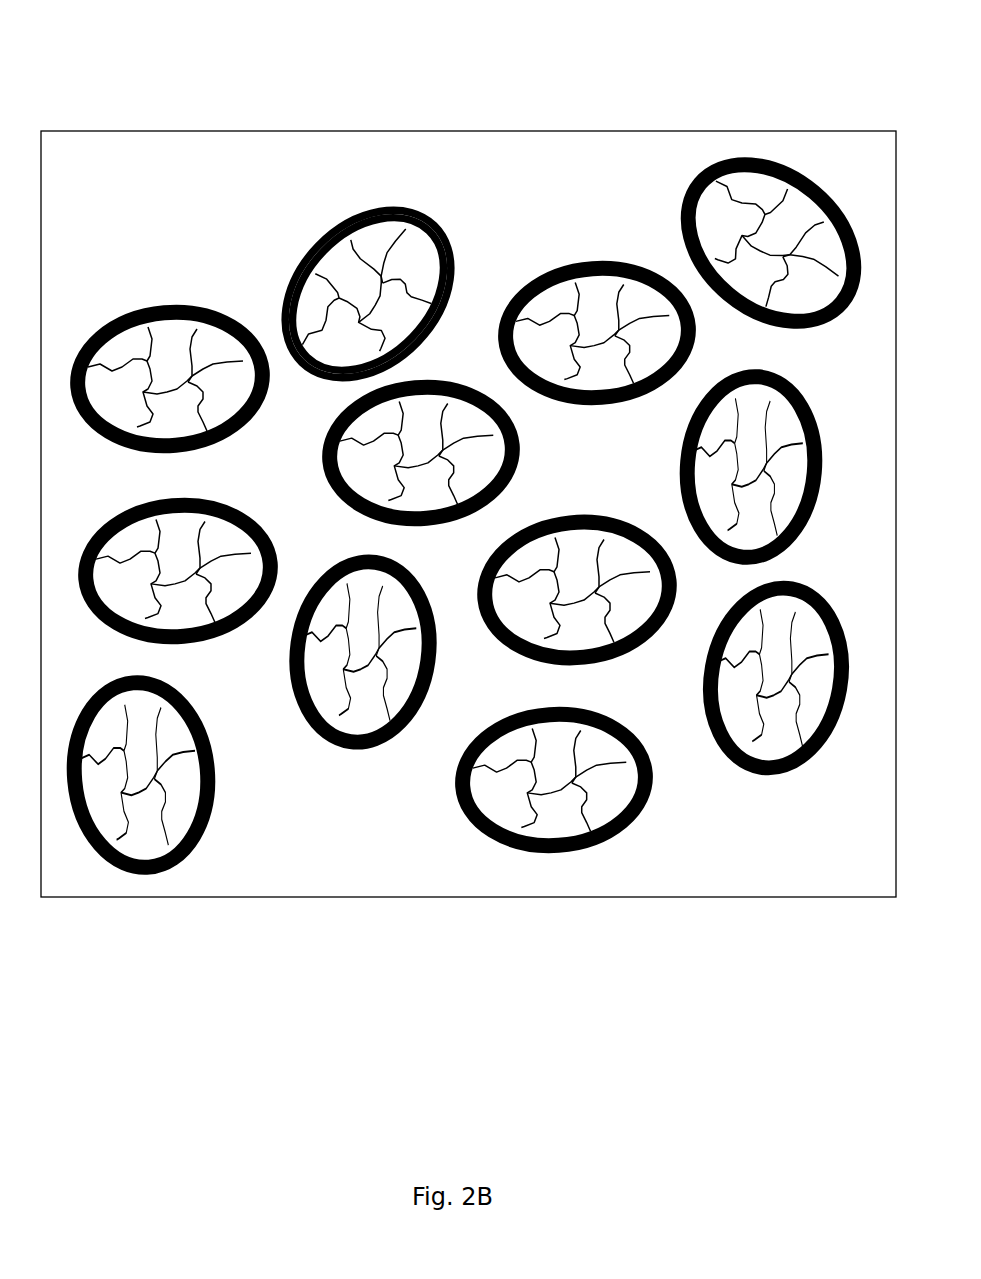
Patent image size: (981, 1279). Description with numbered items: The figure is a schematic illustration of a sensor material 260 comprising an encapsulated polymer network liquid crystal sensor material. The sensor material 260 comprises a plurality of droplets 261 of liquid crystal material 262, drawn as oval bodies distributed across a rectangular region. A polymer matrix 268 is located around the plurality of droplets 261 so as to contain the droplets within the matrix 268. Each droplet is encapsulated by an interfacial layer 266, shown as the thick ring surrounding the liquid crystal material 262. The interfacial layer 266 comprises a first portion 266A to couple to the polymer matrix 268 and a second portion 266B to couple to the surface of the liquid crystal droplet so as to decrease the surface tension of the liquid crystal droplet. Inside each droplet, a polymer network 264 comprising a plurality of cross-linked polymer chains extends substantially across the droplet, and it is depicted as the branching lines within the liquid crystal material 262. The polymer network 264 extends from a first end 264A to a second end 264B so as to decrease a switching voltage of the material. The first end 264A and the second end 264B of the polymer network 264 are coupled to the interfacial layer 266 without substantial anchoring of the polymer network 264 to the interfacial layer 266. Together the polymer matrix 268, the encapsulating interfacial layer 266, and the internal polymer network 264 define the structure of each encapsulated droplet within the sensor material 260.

The sensor material 260 is at (148, 65).
The polymer matrix 268 is at (105, 139).
The droplets 261 is at (666, 185).
The interfacial layer 266 is at (369, 199).
The first portion 266A is at (461, 236).
The second portion 266B is at (440, 222).
The liquid crystal material 262 is at (436, 260).
The polymer network 264 is at (342, 294).
The first end 264A is at (322, 322).
The second end 264B is at (393, 252).